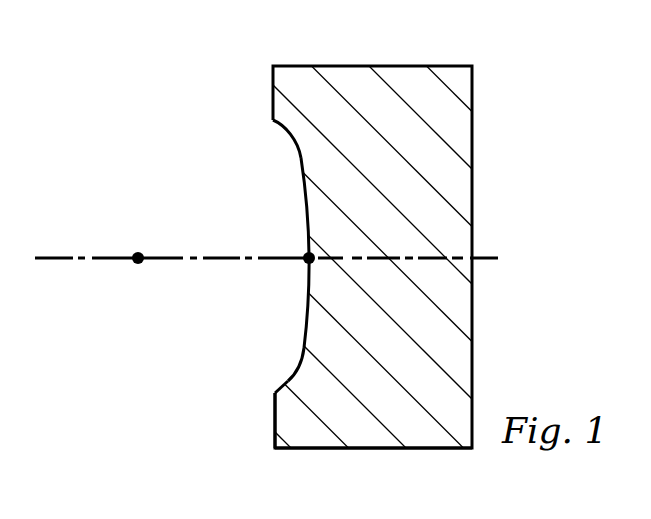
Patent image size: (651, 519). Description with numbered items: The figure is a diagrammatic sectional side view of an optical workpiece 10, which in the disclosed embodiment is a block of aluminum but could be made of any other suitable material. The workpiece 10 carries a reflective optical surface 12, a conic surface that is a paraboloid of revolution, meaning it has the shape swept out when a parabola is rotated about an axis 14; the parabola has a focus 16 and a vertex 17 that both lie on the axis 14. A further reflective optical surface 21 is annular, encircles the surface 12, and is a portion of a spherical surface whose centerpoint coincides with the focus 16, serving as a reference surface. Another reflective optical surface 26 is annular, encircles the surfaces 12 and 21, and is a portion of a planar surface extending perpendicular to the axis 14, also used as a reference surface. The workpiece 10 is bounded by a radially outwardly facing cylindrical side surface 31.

The optical workpiece 10 is at (325, 259).
The reflective optical surface 12 is at (306, 217).
The axis 14 is at (490, 255).
The focus 16 is at (138, 252).
The vertex 17 is at (305, 262).
The reflective optical surface 21 is at (292, 373).
The reflective optical surface 26 is at (275, 425).
The cylindrical side surface 31 is at (318, 448).